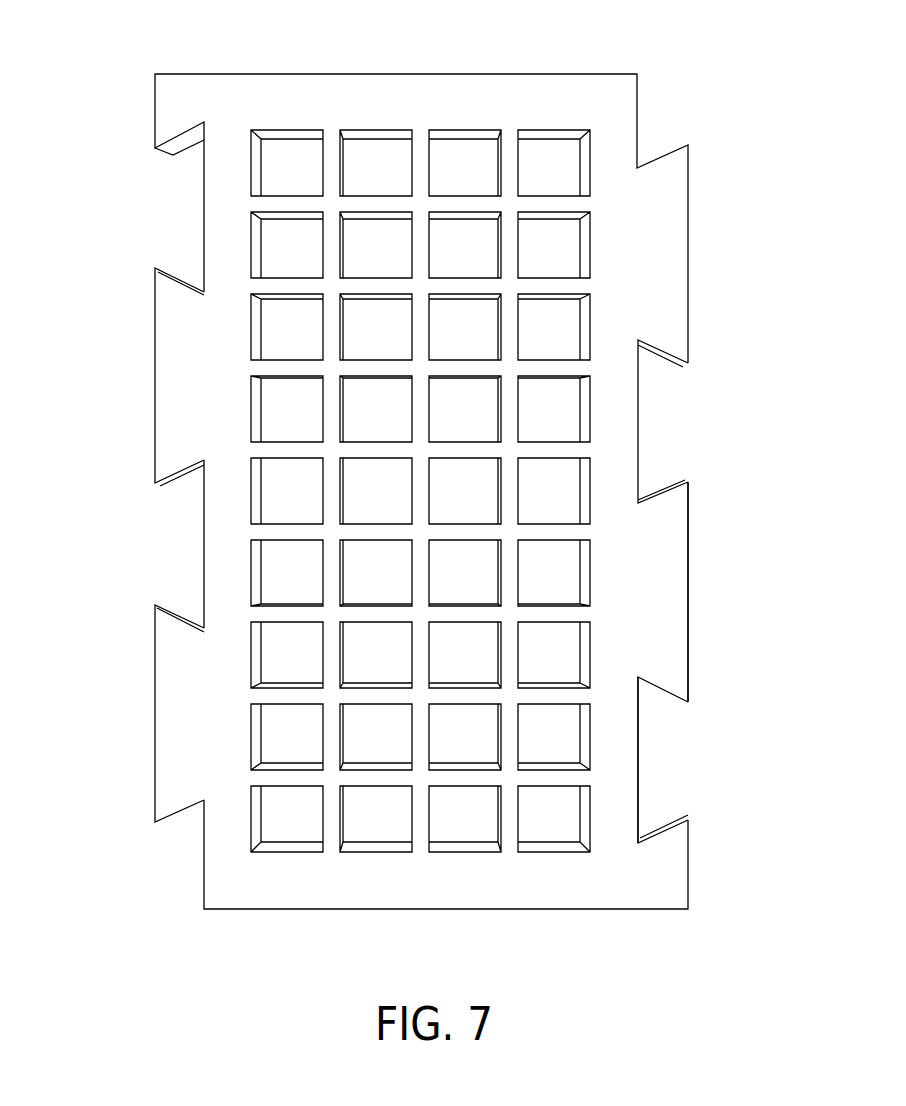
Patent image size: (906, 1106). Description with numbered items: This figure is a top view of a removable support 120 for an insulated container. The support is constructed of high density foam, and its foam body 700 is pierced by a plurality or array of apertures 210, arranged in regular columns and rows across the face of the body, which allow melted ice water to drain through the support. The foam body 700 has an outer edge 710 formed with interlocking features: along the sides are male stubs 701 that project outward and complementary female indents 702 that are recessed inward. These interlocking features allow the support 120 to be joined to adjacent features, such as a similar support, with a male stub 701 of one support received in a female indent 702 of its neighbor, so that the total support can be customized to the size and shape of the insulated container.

The aperture 210 is at (287, 157).
The foam body 700 is at (665, 287).
The male stub 701 is at (155, 705).
The female indent 702 is at (204, 542).
The removable support 120 is at (665, 578).
The outer edge 710 is at (698, 830).